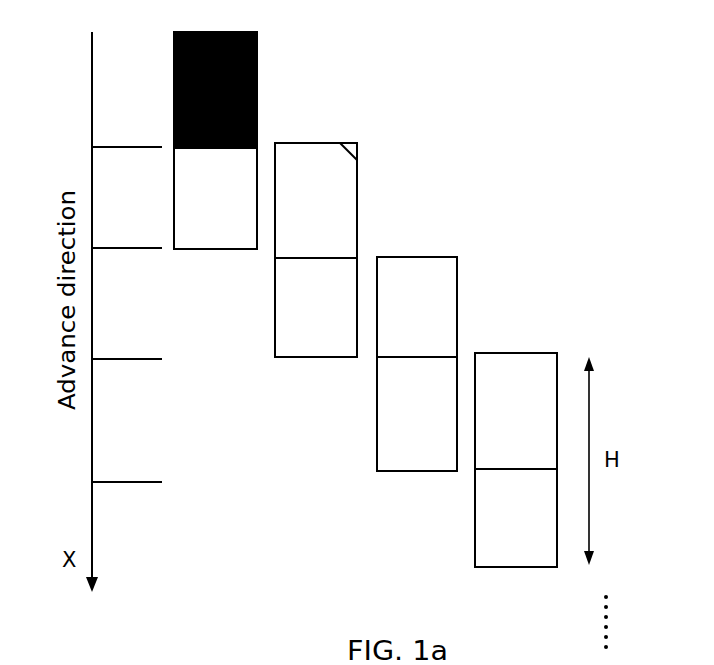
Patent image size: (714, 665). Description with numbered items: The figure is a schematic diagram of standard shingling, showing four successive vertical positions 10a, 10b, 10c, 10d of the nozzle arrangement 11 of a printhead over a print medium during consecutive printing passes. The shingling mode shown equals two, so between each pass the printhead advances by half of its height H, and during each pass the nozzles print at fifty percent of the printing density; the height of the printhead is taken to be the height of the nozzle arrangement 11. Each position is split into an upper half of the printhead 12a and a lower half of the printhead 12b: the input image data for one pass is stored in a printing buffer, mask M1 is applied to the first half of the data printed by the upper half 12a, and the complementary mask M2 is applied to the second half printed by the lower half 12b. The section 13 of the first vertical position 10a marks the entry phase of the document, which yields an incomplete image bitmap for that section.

The first vertical position 10a is at (215, 126).
The second vertical position 10b is at (316, 229).
The third vertical position 10c is at (417, 347).
The fourth vertical position 10d is at (516, 445).
The nozzle arrangement 11 is at (360, 139).
The upper half of the printhead 12a is at (357, 188).
The lower half of the printhead 12b is at (275, 346).
The section 13 is at (174, 65).